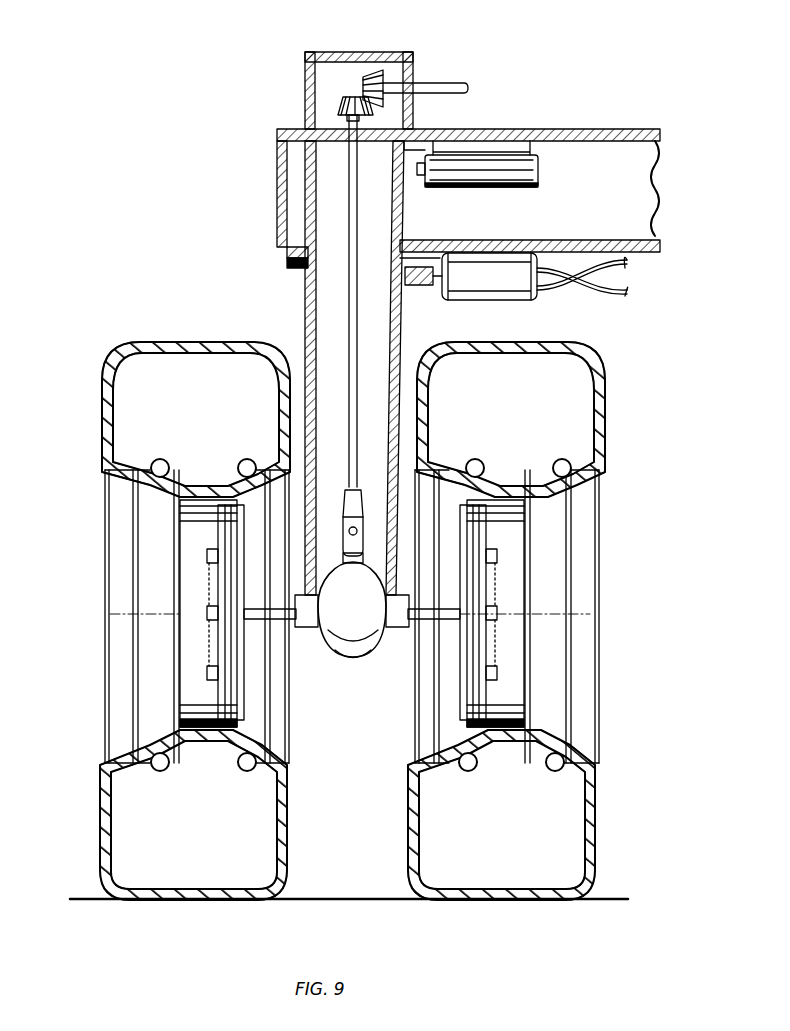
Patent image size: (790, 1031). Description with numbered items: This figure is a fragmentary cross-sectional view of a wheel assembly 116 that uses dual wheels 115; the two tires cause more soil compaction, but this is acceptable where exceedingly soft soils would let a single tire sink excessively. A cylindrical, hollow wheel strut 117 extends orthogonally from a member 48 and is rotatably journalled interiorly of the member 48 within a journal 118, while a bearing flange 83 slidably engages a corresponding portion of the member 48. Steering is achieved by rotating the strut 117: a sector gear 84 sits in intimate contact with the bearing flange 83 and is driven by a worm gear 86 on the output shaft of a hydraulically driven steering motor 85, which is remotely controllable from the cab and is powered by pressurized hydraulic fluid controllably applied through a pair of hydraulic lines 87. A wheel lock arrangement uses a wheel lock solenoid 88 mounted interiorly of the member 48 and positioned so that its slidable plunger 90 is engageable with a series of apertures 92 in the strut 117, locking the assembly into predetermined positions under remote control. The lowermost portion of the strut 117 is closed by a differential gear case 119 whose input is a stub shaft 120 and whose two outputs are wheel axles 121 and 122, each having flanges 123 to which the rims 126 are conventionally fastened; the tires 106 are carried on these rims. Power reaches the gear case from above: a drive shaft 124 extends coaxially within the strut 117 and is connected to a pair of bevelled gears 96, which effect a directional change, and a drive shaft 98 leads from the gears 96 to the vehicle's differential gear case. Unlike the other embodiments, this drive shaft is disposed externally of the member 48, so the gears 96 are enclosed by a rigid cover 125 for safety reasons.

The member 48 is at (583, 131).
The bearing flange 83 is at (287, 255).
The sector gear 84 is at (287, 263).
The steering motor 85 is at (515, 302).
The worm gear 86 is at (432, 286).
The hydraulic lines 87 is at (608, 292).
The wheel lock solenoid 88 is at (478, 157).
The plunger 90 is at (422, 176).
The apertures 92 is at (415, 150).
The bevelled gears 96 is at (351, 92).
The drive shaft 98 is at (440, 82).
The tire 106 is at (595, 829).
The dual wheels 115 is at (390, 836).
The wheel assembly 116 is at (704, 399).
The wheel strut 117 is at (400, 352).
The journal 118 is at (404, 218).
The differential gear case 119 is at (352, 658).
The stub shaft 120 is at (352, 609).
The wheel axle 121 is at (285, 630).
The wheel axle 122 is at (417, 628).
The flanges 123 is at (237, 583).
The drive shaft 124 is at (349, 292).
The rigid cover 125 is at (305, 76).
The rims 126 is at (112, 615).